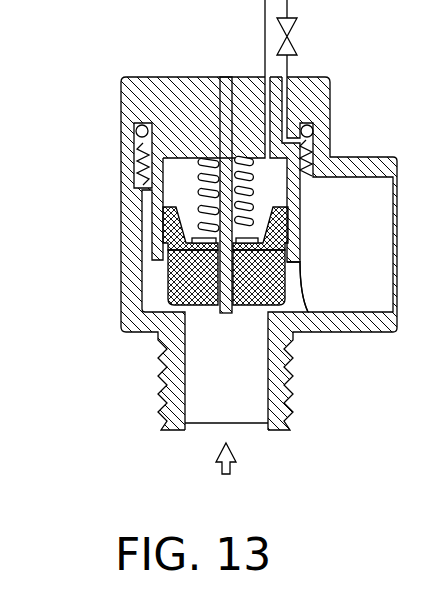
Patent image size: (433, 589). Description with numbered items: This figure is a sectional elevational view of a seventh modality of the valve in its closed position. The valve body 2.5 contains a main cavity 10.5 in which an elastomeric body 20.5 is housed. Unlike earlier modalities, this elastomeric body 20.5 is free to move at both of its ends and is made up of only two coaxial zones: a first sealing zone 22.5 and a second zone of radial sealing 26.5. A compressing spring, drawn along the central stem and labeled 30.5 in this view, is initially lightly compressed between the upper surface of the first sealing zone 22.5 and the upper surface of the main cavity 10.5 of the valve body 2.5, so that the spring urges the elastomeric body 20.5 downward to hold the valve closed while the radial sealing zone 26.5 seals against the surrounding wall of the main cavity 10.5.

The valve body 2.5 is at (342, 148).
The main cavity 10.5 is at (298, 258).
The elastomeric body 20.5 is at (167, 275).
The first sealing zone 22.5 is at (257, 290).
The second zone of radial sealing 26.5 is at (173, 223).
The stem 30.5 is at (210, 158).